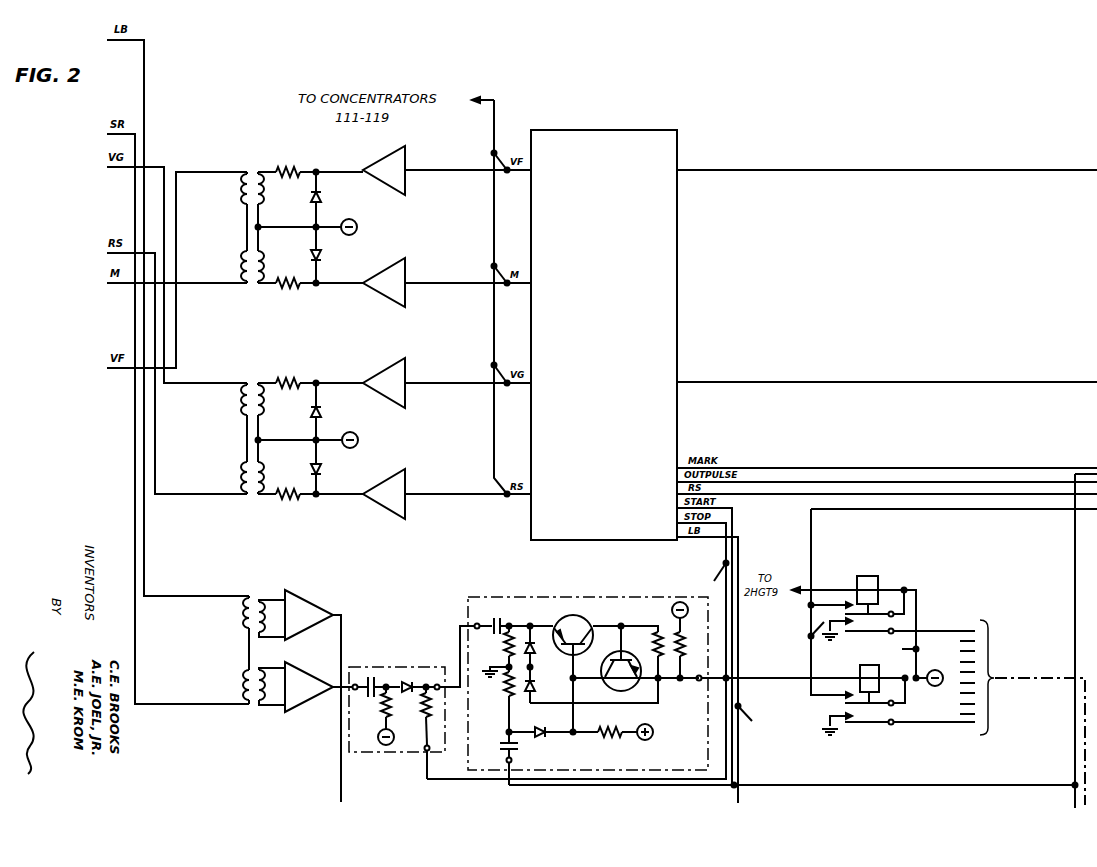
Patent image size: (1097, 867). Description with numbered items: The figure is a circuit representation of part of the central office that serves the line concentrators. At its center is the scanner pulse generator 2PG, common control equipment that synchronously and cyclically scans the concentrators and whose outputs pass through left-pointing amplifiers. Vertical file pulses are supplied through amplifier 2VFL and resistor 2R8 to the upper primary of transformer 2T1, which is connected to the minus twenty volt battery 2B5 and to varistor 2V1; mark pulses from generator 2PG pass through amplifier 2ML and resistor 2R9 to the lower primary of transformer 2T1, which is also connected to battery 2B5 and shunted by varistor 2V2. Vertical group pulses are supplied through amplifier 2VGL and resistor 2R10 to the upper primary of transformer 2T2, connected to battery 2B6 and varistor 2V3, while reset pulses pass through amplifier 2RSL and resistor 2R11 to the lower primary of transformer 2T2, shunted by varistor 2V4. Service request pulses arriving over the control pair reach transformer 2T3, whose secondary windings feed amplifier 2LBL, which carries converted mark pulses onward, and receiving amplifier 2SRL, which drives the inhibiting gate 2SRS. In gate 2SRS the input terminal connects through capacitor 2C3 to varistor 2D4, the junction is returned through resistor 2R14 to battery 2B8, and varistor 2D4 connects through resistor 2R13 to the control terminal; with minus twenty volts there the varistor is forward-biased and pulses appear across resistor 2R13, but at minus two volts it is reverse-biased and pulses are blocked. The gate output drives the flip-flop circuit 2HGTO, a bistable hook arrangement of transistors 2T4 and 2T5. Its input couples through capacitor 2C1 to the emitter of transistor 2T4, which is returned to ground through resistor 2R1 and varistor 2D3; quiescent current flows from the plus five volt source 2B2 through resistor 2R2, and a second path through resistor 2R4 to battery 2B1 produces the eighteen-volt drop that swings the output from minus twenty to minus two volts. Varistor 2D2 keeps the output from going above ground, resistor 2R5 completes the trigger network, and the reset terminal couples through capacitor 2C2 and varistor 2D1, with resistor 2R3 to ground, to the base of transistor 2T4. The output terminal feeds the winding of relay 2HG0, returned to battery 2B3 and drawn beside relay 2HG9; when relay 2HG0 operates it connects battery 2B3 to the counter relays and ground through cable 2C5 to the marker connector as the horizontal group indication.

The transformer 2T1 is at (251, 170).
The resistor 2R8 is at (289, 166).
The varistor 2V1 is at (310, 199).
The varistor 2V2 is at (322, 256).
The battery 2B5 is at (348, 218).
The resistor 2R9 is at (288, 288).
The amplifier 2VFL is at (405, 178).
The amplifier 2ML is at (410, 292).
The transformer 2T2 is at (250, 383).
The resistor 2R10 is at (287, 376).
The varistor 2V3 is at (309, 413).
The varistor 2V4 is at (322, 469).
The battery 2B6 is at (350, 432).
The resistor 2R11 is at (287, 499).
The amplifier 2VGL is at (408, 388).
The amplifier 2RSL is at (410, 492).
The scanner pulse generator 2PG is at (604, 335).
The transformer 2T3 is at (258, 596).
The amplifier 2LBL is at (319, 602).
The receiving amplifier 2SRL is at (313, 660).
The inhibiting gate 2SRS is at (388, 704).
The capacitor 2C3 is at (365, 697).
The varistor 2D4 is at (408, 695).
The resistor 2R14 is at (380, 710).
The battery 2B8 is at (380, 746).
The resistor 2R13 is at (424, 722).
The flip-flop circuit 2HGTO is at (632, 597).
The capacitor 2C1 is at (494, 622).
The resistor 2R1 is at (493, 646).
The resistor 2R3 is at (506, 700).
The varistor 2D3 is at (532, 654).
The varistor 2D2 is at (534, 682).
The transistor 2T4 is at (571, 617).
The transistor 2T5 is at (613, 689).
The resistor 2R5 is at (660, 669).
The resistor 2R4 is at (676, 632).
The battery 2B1 is at (680, 602).
The varistor 2D1 is at (541, 738).
The resistor 2R2 is at (610, 738).
The source 2B2 is at (653, 735).
The capacitor 2C2 is at (502, 746).
The relay 2HG9 is at (868, 576).
The relay 2HG0 is at (862, 665).
The battery 2B3 is at (936, 670).
The cable 2C5 is at (1029, 675).